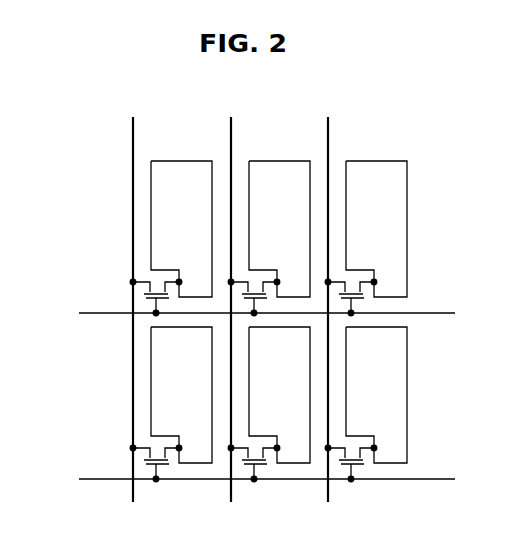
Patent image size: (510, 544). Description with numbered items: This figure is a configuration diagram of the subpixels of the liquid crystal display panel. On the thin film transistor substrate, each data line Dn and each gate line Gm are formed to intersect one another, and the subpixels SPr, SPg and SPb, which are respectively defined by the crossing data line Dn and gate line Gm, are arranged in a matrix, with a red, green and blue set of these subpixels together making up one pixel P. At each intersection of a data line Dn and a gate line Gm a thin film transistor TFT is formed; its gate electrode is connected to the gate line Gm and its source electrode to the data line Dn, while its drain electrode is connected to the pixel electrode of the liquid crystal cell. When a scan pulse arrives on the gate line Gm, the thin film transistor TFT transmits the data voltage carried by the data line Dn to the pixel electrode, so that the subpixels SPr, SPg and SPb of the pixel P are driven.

The pixel P is at (52, 146).
The data line Dn is at (132, 301).
The gate line Gm is at (249, 313).
The subpixel SPr is at (196, 231).
The subpixel SPg is at (294, 231).
The subpixel SPb is at (391, 231).
The thin film transistor TFT is at (143, 296).